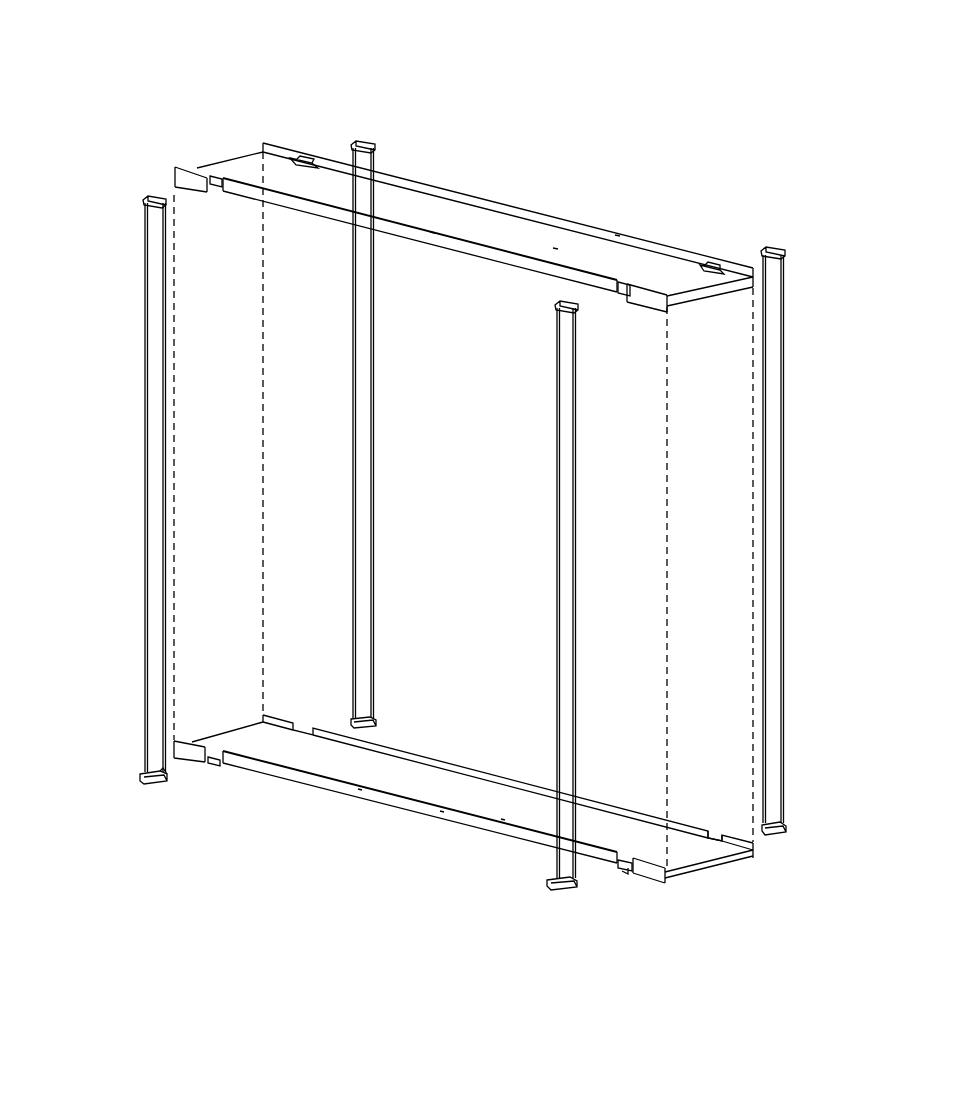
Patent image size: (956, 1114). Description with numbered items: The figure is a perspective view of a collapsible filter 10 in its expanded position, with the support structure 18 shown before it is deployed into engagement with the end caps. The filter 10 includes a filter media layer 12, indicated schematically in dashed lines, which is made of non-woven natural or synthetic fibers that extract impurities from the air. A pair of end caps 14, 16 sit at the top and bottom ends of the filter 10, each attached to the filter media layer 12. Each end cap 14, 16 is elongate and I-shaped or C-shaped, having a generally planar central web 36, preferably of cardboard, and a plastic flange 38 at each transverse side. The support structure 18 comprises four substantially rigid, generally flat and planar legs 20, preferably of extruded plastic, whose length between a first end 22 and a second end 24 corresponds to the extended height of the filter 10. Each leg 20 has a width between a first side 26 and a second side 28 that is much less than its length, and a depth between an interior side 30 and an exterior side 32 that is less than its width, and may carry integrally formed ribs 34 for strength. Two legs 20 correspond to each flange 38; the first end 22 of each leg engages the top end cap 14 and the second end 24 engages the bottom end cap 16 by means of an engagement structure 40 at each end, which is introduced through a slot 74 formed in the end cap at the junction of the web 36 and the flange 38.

The filter 10 is at (124, 62).
The filter media layer 12 is at (733, 640).
The top end cap 14 is at (498, 225).
The bottom end cap 16 is at (400, 800).
The support structure 18 is at (105, 488).
The leg 20 is at (148, 470).
The first end 22 is at (137, 488).
The second end 24 is at (150, 783).
The first side 26 is at (137, 773).
The second side 28 is at (167, 770).
The interior side 30 is at (355, 150).
The exterior side 32 is at (157, 430).
The rib 34 is at (807, 537).
The central web 36 is at (555, 248).
The flange 38 is at (432, 230).
The engagement structure 40 is at (770, 250).
The slot 74 is at (710, 842).